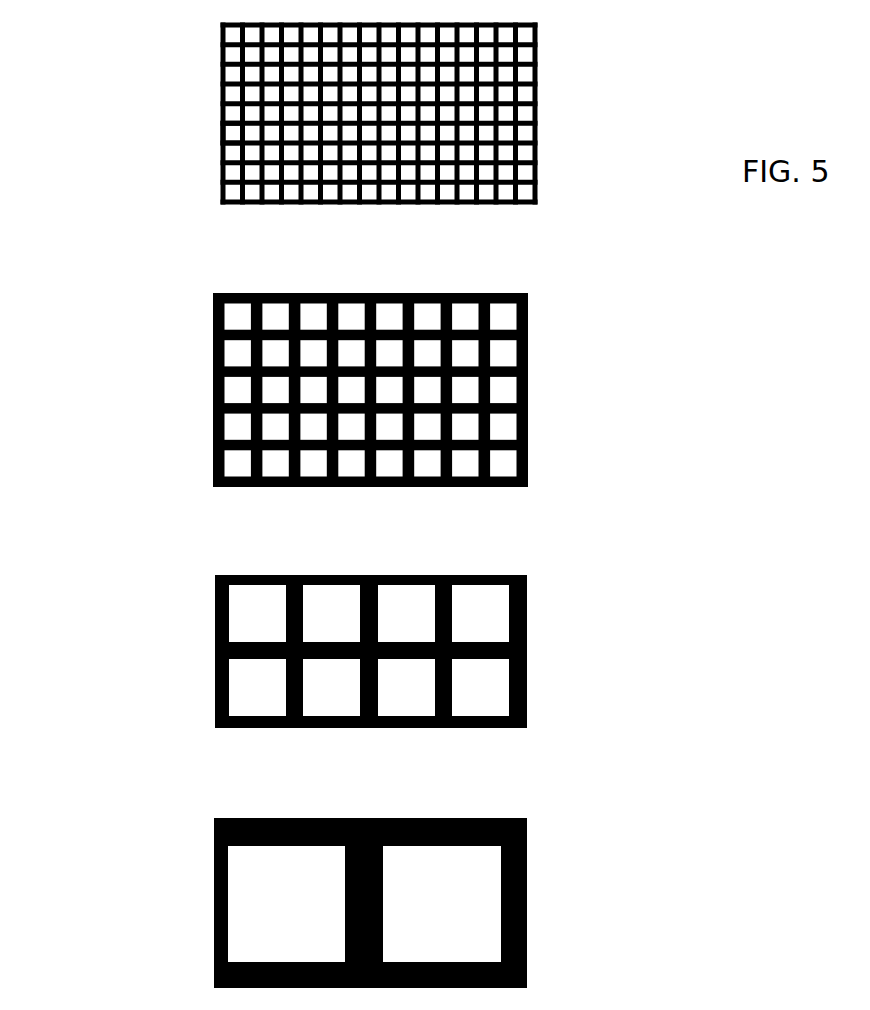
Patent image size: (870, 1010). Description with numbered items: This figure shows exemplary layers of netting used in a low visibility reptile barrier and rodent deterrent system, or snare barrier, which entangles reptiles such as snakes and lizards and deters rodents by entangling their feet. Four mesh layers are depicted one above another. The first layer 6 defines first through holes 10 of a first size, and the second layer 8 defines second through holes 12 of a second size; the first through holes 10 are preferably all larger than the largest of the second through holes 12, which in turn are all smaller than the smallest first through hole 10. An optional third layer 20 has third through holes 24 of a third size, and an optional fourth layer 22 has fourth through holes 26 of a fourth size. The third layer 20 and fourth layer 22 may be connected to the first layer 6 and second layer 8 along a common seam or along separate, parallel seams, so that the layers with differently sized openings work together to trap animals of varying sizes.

The fourth layer 22 is at (535, 93).
The fourth through holes 26 is at (220, 134).
The third layer 20 is at (528, 383).
The third through holes 24 is at (245, 383).
The second layer 8 is at (527, 692).
The second through holes 12 is at (260, 693).
The first layer 6 is at (527, 930).
The first through holes 10 is at (260, 905).